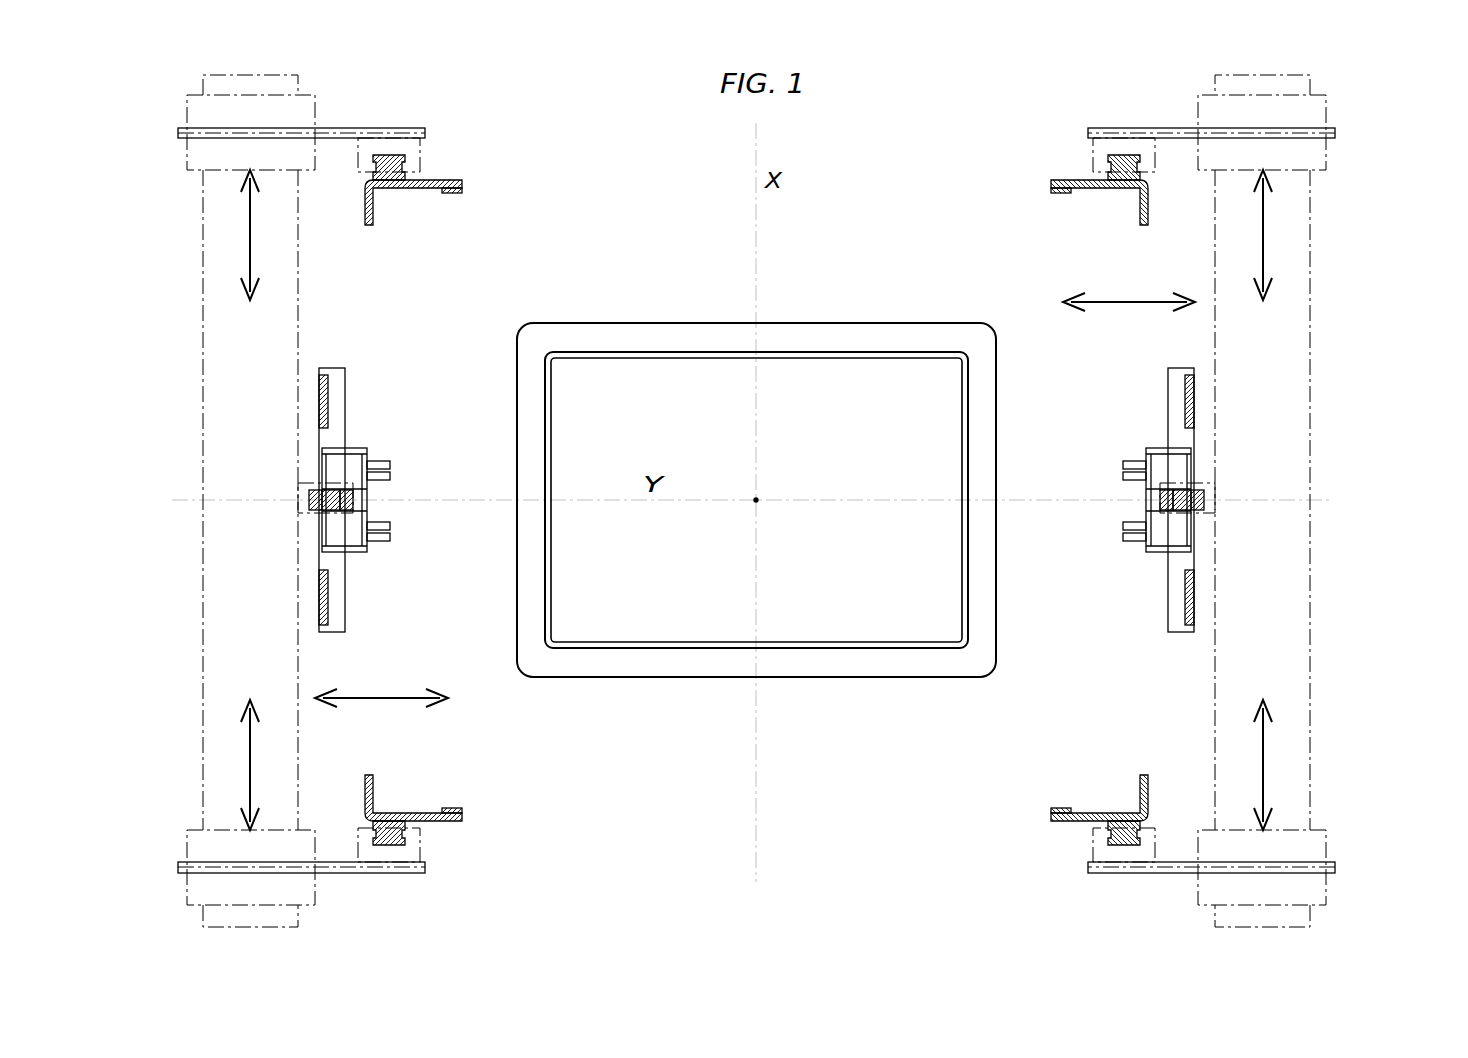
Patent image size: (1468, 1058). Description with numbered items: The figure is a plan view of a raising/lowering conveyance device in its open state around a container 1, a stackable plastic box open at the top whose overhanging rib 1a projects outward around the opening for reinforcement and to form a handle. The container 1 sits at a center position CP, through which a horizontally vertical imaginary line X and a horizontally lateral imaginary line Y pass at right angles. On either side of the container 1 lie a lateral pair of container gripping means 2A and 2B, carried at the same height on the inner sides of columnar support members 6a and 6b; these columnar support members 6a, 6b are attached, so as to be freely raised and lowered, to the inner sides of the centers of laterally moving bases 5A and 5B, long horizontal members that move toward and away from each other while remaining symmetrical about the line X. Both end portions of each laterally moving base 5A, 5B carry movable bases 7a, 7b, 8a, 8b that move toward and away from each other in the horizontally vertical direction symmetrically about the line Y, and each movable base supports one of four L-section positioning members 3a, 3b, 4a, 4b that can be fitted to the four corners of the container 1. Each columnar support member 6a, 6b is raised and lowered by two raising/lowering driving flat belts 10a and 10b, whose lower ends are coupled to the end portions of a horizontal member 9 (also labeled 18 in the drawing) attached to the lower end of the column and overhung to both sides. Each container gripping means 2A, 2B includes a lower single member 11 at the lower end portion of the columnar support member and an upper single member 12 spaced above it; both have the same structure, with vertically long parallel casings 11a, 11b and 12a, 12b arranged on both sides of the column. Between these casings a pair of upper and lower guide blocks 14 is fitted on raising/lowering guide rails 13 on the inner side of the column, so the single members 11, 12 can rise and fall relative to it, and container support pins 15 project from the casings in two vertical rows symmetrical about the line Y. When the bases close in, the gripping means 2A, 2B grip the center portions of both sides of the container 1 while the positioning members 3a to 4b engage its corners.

The container 1 is at (713, 686).
The overhanging rib 1a is at (811, 671).
The container gripping means 2A is at (1130, 553).
The container gripping means 2B is at (385, 549).
The positioning member 3a is at (1075, 182).
The positioning member 3b is at (1073, 821).
The positioning member 4a is at (436, 820).
The positioning member 4b is at (437, 182).
The laterally moving base 5A is at (1280, 340).
The laterally moving base 5B is at (217, 293).
The columnar support member 6a is at (1180, 512).
The columnar support member 6b is at (330, 484).
The movable base 7a is at (1280, 160).
The movable base 7b is at (1283, 840).
The movable base 8a is at (233, 848).
The movable base 8b is at (233, 160).
The horizontal member 9 is at (756, 482).
The plate member 18 is at (342, 387).
The raising/lowering driving flat belt 10a is at (1193, 400).
The raising/lowering driving flat belt 10b is at (319, 401).
The lower single member 11 is at (759, 505).
The upper single member 12 is at (308, 527).
The parallel casing 11a is at (881, 513).
The parallel casing 12a is at (355, 553).
The parallel casing 11b is at (756, 521).
The parallel casing 12b is at (353, 460).
The raising/lowering guide rail 13 is at (350, 488).
The guide block 14 is at (355, 508).
The container support pin 15 is at (390, 476).
The center position CP is at (757, 499).